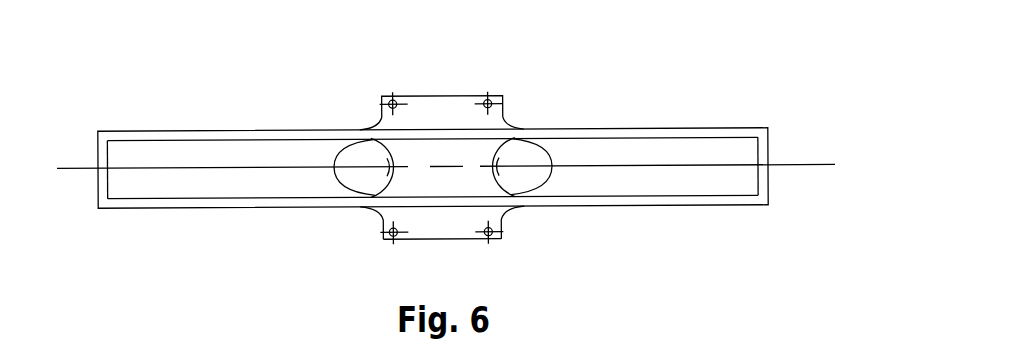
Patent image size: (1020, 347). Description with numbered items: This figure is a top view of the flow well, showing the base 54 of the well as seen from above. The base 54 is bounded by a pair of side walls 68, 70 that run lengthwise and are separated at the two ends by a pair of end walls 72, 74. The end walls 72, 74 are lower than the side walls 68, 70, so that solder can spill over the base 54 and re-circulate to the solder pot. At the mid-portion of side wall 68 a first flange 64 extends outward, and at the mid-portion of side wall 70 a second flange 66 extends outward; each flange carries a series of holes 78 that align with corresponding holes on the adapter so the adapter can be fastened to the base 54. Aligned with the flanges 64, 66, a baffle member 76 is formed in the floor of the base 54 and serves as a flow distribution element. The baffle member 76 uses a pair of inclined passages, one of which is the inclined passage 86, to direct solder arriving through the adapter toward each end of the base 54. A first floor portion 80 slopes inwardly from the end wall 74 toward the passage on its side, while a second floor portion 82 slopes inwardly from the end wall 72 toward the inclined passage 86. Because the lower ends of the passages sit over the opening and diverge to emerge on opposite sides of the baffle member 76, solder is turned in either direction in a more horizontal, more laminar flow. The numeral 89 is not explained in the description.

The base 54 is at (709, 76).
The first flange 64 is at (503, 220).
The second flange 66 is at (507, 118).
The side wall 68 is at (622, 200).
The side wall 70 is at (609, 135).
The end wall 72 is at (766, 150).
The end wall 74 is at (101, 172).
The baffle member 76 is at (464, 162).
The holes 78 is at (465, 239).
The first floor portion 80 is at (168, 162).
The second floor portion 82 is at (712, 162).
The inclined passage 86 is at (537, 158).
The left cam lobe 89 is at (352, 161).